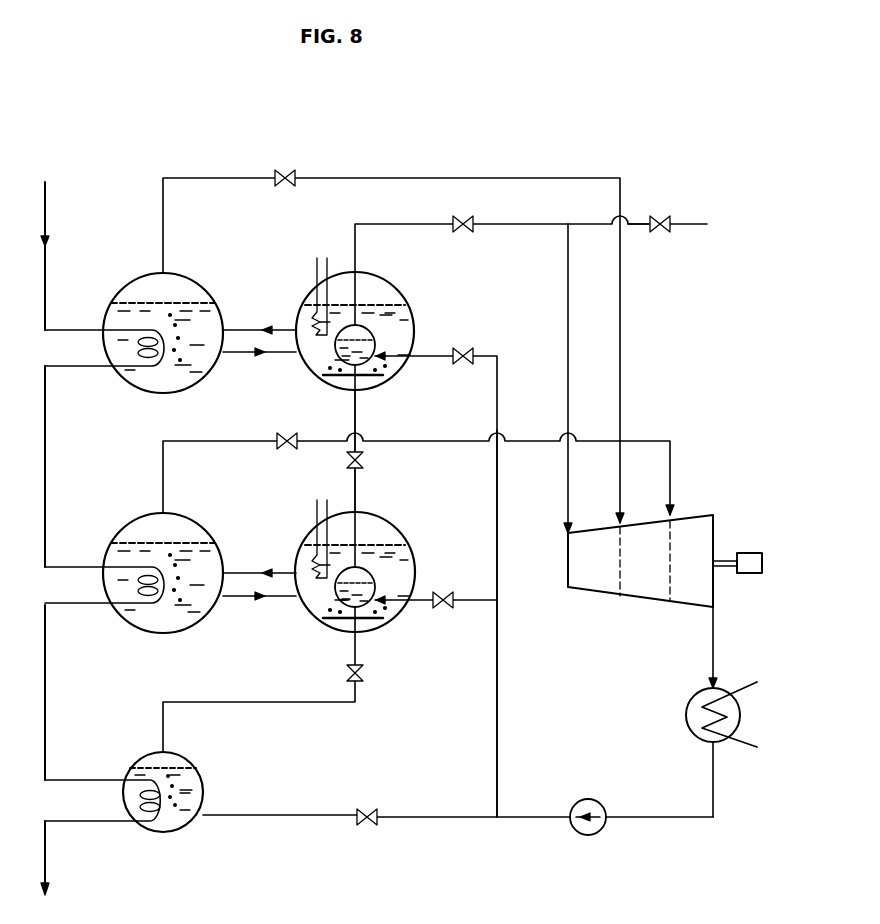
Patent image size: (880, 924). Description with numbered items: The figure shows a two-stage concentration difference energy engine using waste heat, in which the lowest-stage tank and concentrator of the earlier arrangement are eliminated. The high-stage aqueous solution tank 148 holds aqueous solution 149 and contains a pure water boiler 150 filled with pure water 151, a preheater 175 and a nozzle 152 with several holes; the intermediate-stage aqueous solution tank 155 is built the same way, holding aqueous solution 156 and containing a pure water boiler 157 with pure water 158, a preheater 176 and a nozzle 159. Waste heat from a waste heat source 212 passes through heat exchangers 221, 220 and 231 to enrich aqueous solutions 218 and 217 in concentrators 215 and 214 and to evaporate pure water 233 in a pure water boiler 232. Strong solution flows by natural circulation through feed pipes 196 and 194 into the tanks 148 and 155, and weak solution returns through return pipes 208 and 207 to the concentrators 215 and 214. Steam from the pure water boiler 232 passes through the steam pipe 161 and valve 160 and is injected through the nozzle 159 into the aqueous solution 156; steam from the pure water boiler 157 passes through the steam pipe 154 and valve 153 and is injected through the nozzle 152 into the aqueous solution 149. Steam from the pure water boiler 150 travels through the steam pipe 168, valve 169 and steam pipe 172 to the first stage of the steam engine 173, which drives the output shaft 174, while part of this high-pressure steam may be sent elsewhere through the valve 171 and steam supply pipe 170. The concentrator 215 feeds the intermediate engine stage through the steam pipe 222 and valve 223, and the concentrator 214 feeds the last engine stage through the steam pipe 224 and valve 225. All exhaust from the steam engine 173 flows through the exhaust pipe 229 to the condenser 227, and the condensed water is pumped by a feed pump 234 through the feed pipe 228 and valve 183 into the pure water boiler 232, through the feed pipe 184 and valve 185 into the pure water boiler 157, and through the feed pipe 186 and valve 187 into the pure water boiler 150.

The high-stage aqueous solution tank 148 is at (388, 284).
The aqueous solution 149 is at (405, 305).
The pure water boiler 150 is at (375, 335).
The pure water 151 is at (372, 354).
The nozzle 152 is at (370, 385).
The valve 153 is at (364, 462).
The steam pipe 154 is at (360, 506).
The intermediate-stage aqueous solution tank 155 is at (410, 568).
The aqueous solution 156 is at (396, 579).
The pure water boiler 157 is at (365, 572).
The pure water 158 is at (336, 590).
The nozzle 159 is at (347, 623).
The valve 160 is at (365, 675).
The steam pipe 161 is at (326, 705).
The steam pipe 168 is at (425, 224).
The valve 169 is at (475, 221).
The steam supply pipe 170 is at (641, 218).
The valve 171 is at (666, 236).
The steam pipe 172 is at (572, 306).
The steam engine 173 is at (714, 519).
The output shaft 174 is at (759, 555).
The preheater 175 is at (335, 257).
The preheater 176 is at (337, 499).
The valve 183 is at (370, 827).
The feed pipe 184 is at (480, 602).
The valve 185 is at (444, 610).
The feed pipe 186 is at (497, 571).
The valve 187 is at (472, 352).
The feed pipe 194 is at (228, 603).
The feed pipe 196 is at (266, 361).
The return pipe 207 is at (276, 566).
The return pipe 208 is at (267, 323).
The waste heat source 212 is at (47, 234).
The concentrator 214 is at (170, 634).
The concentrator 215 is at (135, 393).
The aqueous solution 217 is at (189, 620).
The aqueous solution 218 is at (193, 376).
The heat exchanger 220 is at (148, 598).
The heat exchanger 221 is at (130, 362).
The steam pipe 222 is at (228, 175).
The valve 223 is at (284, 168).
The steam pipe 224 is at (243, 448).
The valve 225 is at (291, 452).
The condenser 227 is at (686, 708).
The feed pipe 228 is at (475, 818).
The exhaust pipe 229 is at (720, 636).
The heat exchanger 231 is at (150, 815).
The pure water boiler 232 is at (198, 768).
The pure water 233 is at (192, 796).
The feed pump 234 is at (598, 834).